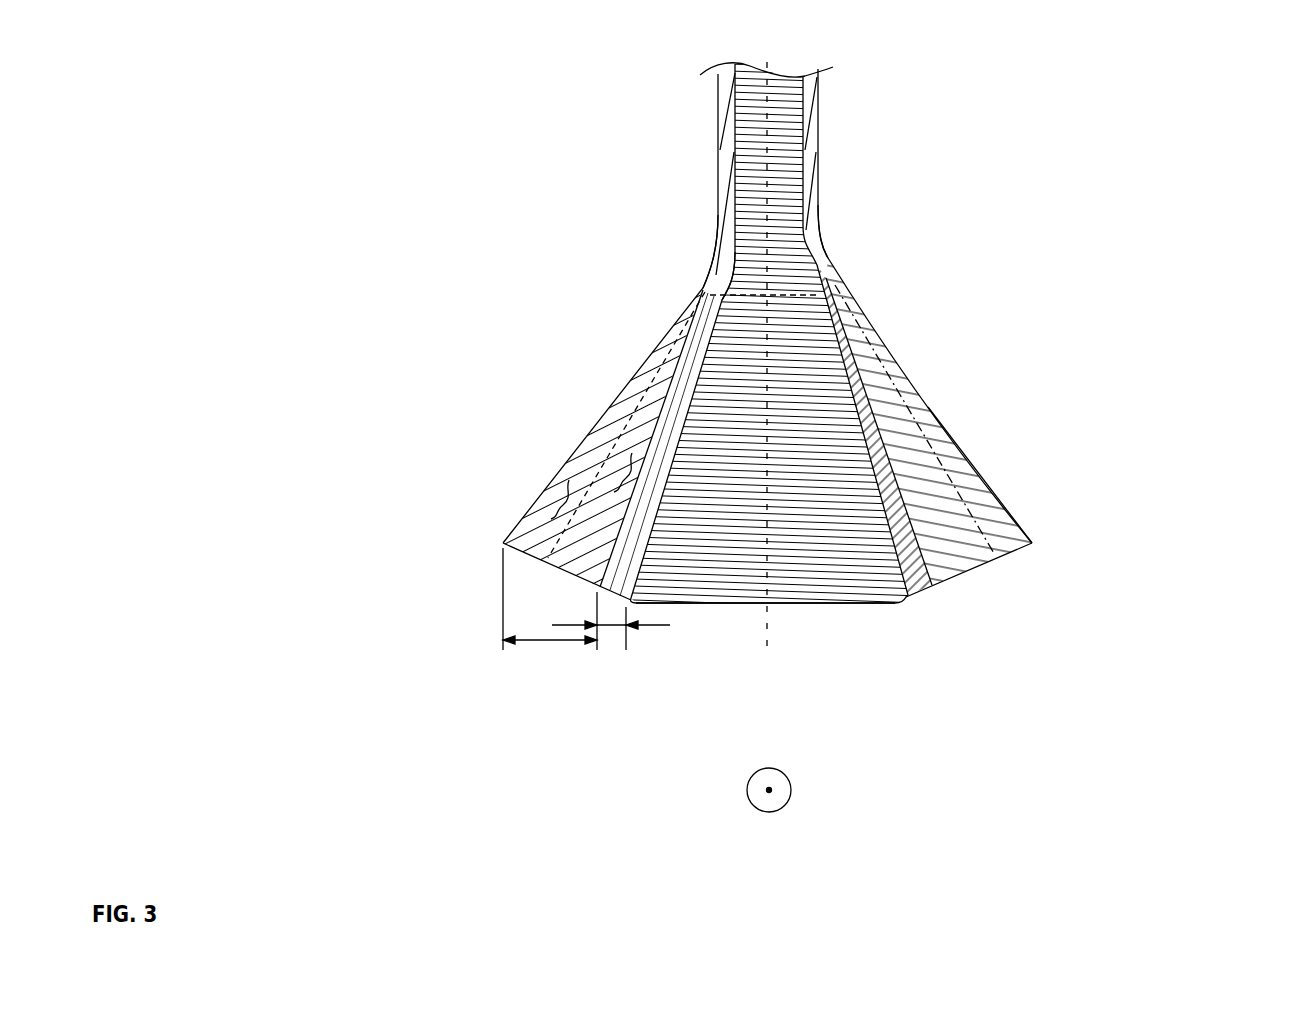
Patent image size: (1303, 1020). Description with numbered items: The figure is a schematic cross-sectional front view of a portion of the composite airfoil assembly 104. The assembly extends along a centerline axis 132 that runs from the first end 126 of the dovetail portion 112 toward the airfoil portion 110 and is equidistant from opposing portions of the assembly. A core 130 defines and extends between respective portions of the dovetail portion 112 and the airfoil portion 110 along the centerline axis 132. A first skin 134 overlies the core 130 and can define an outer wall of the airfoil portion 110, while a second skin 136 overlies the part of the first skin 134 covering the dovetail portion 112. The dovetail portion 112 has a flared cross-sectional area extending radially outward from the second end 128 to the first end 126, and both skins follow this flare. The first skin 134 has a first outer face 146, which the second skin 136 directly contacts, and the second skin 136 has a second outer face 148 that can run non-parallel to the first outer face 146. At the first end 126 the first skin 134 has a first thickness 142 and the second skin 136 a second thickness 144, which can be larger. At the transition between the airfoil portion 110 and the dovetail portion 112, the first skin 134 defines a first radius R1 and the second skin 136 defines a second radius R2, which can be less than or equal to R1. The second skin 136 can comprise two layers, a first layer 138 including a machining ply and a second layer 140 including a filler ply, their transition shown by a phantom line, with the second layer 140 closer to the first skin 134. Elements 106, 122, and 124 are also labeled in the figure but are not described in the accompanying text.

The composite airfoil assembly 104 is at (256, 70).
The axis 106 is at (792, 792).
The airfoil portion 110 is at (840, 155).
The dovetail portion 112 is at (935, 394).
The first wall 122 is at (833, 99).
The second wall 124 is at (705, 99).
The first end 126 is at (857, 607).
The second end 128 is at (828, 253).
The core 130 is at (737, 165).
The centerline axis 132 is at (825, 213).
The first skin 134 is at (655, 437).
The second skin 136 is at (993, 500).
The first layer 138 is at (555, 497).
The second layer 140 is at (620, 470).
The first thickness 142 is at (610, 627).
The second thickness 144 is at (568, 640).
The first outer face 146 is at (908, 497).
The second outer face 148 is at (1000, 500).
The first radius R1 is at (706, 272).
The second radius R2 is at (690, 281).